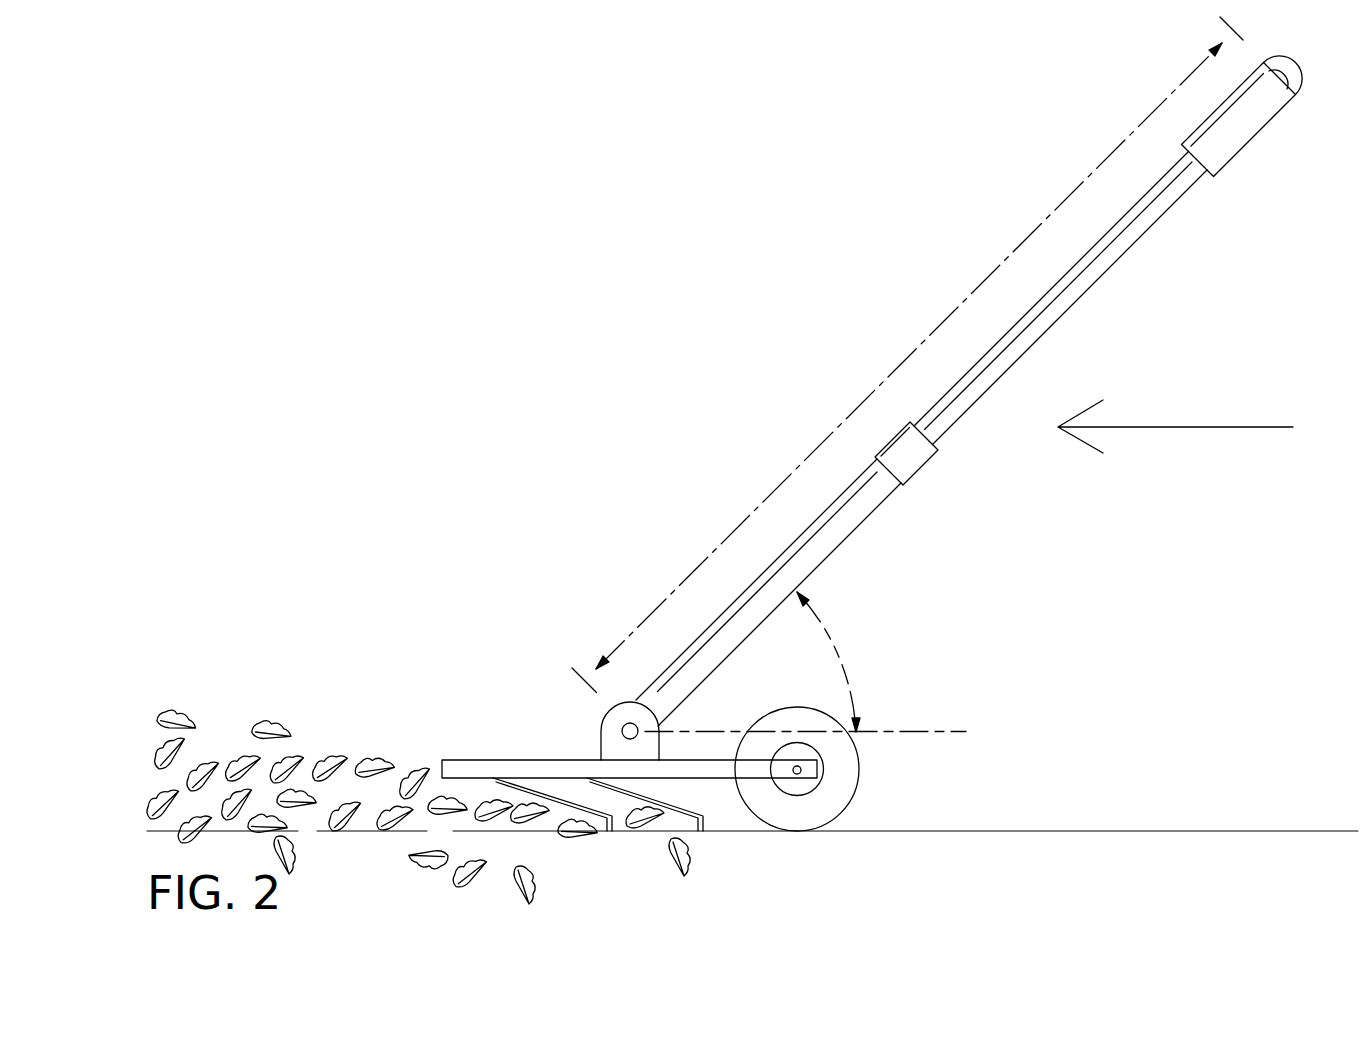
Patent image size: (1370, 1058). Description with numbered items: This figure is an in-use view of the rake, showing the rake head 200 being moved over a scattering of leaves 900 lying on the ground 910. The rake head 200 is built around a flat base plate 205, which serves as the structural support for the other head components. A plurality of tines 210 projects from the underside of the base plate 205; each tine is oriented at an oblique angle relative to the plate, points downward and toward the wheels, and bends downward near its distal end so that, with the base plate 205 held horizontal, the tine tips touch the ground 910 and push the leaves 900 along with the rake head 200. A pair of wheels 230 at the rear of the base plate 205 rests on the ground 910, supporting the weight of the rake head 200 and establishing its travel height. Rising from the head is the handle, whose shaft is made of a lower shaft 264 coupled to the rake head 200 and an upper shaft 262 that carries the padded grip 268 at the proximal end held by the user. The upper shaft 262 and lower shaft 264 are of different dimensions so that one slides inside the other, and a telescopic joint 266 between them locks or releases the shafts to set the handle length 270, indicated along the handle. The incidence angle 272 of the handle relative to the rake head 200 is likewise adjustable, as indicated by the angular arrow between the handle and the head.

The rake head 200 is at (987, 703).
The base plate 205 is at (453, 762).
The plurality of tines 210 is at (631, 797).
The pair of wheels 230 is at (843, 792).
The upper shaft 262 is at (1105, 262).
The lower shaft 264 is at (867, 503).
The telescopic joint 266 is at (922, 460).
The grip 268 is at (1252, 120).
The handle length 270 is at (907, 355).
The incidence angle 272 is at (858, 662).
The leaves 900 is at (242, 754).
The ground 910 is at (737, 833).